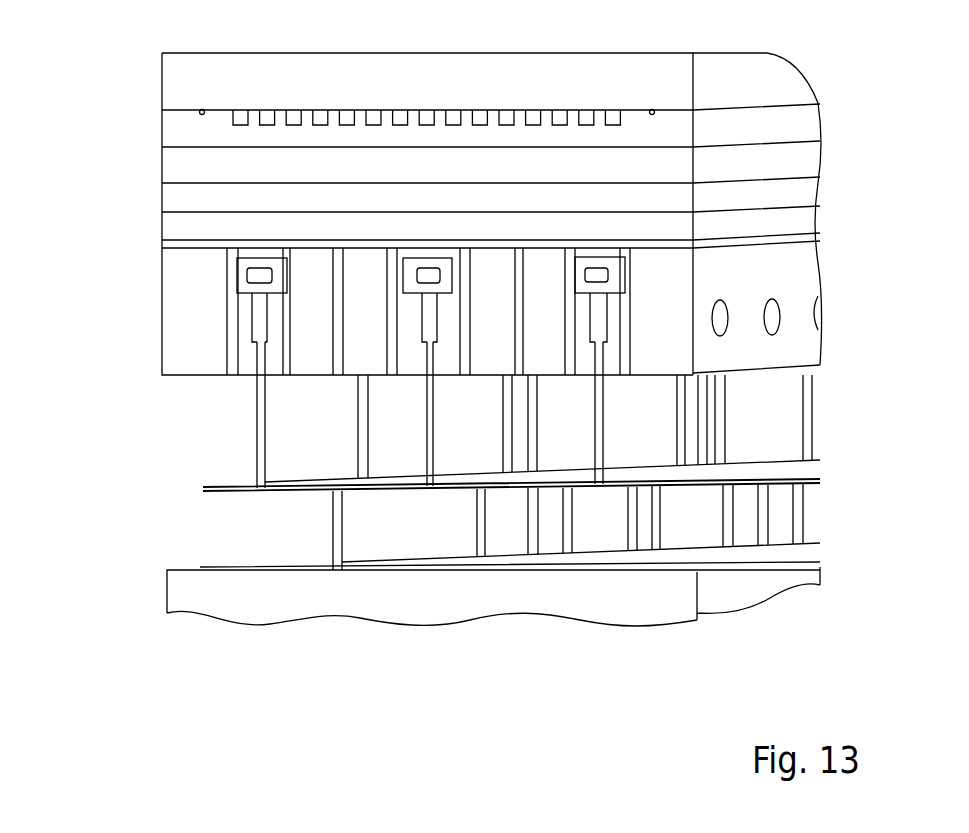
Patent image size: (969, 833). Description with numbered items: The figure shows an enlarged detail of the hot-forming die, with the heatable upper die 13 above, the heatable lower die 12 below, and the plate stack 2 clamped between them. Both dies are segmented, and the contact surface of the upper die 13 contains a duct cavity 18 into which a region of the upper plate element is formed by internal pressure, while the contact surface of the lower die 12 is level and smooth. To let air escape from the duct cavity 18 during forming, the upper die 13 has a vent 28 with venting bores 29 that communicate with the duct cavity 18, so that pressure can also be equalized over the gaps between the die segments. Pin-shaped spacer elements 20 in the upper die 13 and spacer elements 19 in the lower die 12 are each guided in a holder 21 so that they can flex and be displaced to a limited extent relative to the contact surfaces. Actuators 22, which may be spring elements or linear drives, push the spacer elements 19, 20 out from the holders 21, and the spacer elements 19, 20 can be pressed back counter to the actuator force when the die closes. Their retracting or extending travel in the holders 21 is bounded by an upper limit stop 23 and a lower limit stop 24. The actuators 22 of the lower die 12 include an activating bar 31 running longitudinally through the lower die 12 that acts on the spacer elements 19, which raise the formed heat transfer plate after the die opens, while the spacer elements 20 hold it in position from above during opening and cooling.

The plate stack 2 is at (205, 494).
The lower die 12 is at (213, 638).
The upper die 13 is at (152, 226).
The duct cavity 18 is at (323, 378).
The spacer elements 19 is at (342, 542).
The spacer elements 20 is at (257, 410).
The holder 21 is at (252, 325).
The actuators 22 is at (235, 280).
The upper limit stop 23 is at (612, 280).
The lower limit stop 24 is at (609, 348).
The vent 28 is at (351, 312).
The venting bores 29 is at (472, 317).
The activating bar 31 is at (620, 267).